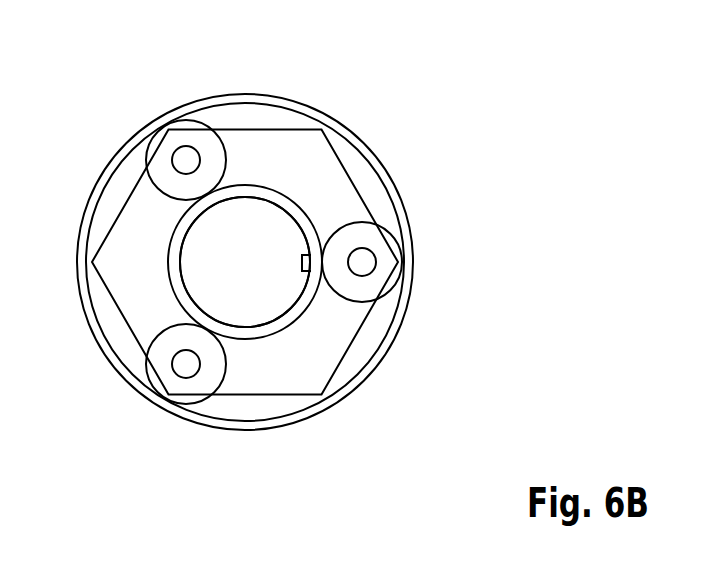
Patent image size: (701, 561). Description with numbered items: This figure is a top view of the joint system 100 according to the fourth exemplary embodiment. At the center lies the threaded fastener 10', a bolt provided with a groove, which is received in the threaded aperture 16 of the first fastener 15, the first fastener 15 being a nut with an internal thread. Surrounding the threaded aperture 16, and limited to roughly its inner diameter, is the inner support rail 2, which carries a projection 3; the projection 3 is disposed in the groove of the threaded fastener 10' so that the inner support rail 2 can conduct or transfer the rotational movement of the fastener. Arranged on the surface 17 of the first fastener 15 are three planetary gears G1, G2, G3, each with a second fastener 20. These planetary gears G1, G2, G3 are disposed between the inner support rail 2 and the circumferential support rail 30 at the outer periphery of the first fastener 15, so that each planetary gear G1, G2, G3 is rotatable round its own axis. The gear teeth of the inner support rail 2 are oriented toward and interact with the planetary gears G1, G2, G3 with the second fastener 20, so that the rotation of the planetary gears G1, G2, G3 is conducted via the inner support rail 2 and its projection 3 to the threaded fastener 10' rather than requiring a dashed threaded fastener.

The joint system 100 is at (413, 102).
The circumferential support rail 30 is at (373, 163).
The first fastener 15 is at (130, 233).
The surface 17 is at (326, 197).
The threaded aperture 16 is at (281, 262).
The threaded fastener 10' is at (162, 262).
The projection 3 is at (300, 263).
The inner support rail 2 is at (300, 307).
The second fastener 20 is at (186, 160).
The planetary gear G1 is at (163, 142).
The planetary gear G2 is at (175, 382).
The planetary gear G3 is at (388, 260).